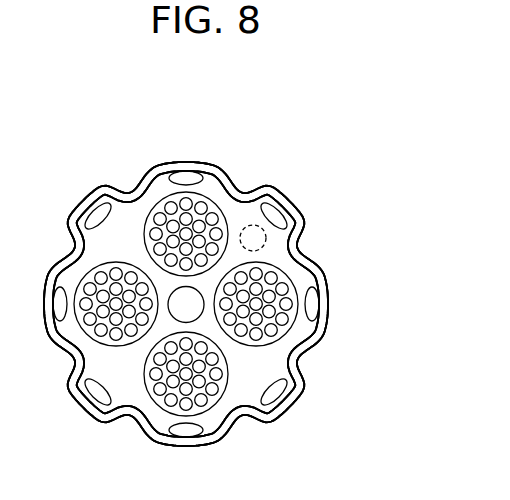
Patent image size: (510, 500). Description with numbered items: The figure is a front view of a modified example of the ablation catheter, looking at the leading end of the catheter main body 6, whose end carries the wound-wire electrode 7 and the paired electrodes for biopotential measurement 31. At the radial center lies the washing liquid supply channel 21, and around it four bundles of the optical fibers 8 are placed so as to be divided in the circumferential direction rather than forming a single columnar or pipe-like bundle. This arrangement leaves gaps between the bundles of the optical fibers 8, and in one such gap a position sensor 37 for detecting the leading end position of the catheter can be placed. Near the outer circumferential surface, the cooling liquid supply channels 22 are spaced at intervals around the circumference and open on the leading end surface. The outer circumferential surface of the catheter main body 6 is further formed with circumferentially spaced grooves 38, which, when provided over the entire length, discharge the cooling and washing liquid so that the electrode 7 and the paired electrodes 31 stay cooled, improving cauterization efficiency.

The catheter main body 6 is at (330, 283).
The electrode for ablation 7 is at (210, 305).
The paired electrodes for biopotential measurement 31 is at (291, 398).
The grooves 38 is at (297, 358).
The cooling liquid supply channels 22 is at (317, 303).
The optical fibers 8 is at (207, 208).
The washing liquid supply channel 21 is at (173, 317).
The position sensor 37 is at (253, 225).